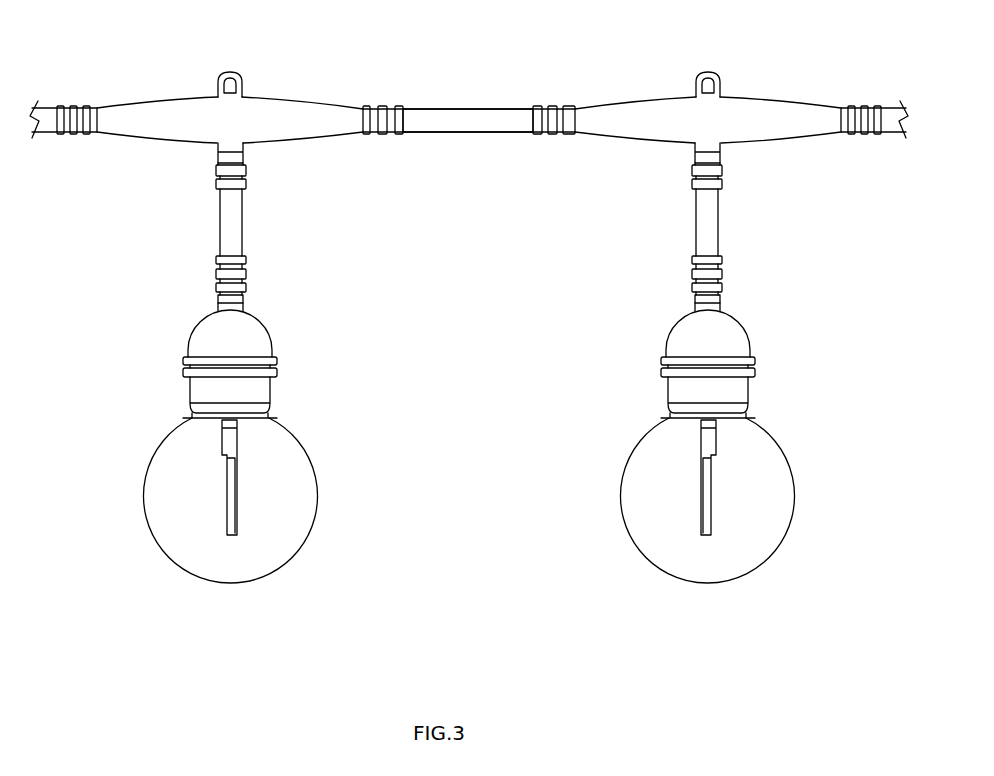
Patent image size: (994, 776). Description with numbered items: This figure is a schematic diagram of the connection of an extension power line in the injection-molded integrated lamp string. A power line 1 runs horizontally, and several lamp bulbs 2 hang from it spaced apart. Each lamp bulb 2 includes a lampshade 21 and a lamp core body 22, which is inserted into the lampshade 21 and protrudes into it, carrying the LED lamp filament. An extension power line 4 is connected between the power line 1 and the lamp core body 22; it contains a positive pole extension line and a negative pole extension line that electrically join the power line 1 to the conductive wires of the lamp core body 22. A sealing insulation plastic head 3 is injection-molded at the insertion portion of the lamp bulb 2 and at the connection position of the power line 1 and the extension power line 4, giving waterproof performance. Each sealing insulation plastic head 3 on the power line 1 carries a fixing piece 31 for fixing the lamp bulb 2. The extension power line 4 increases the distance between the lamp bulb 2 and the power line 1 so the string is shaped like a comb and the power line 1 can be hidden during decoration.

The power line 1 is at (482, 120).
The lamp bulb 2 is at (466, 524).
The lampshade 21 is at (193, 577).
The lamp core body 22 is at (218, 485).
The sealing insulation plastic head 3 is at (193, 112).
The fixing piece 31 is at (238, 75).
The extension power line 4 is at (228, 218).